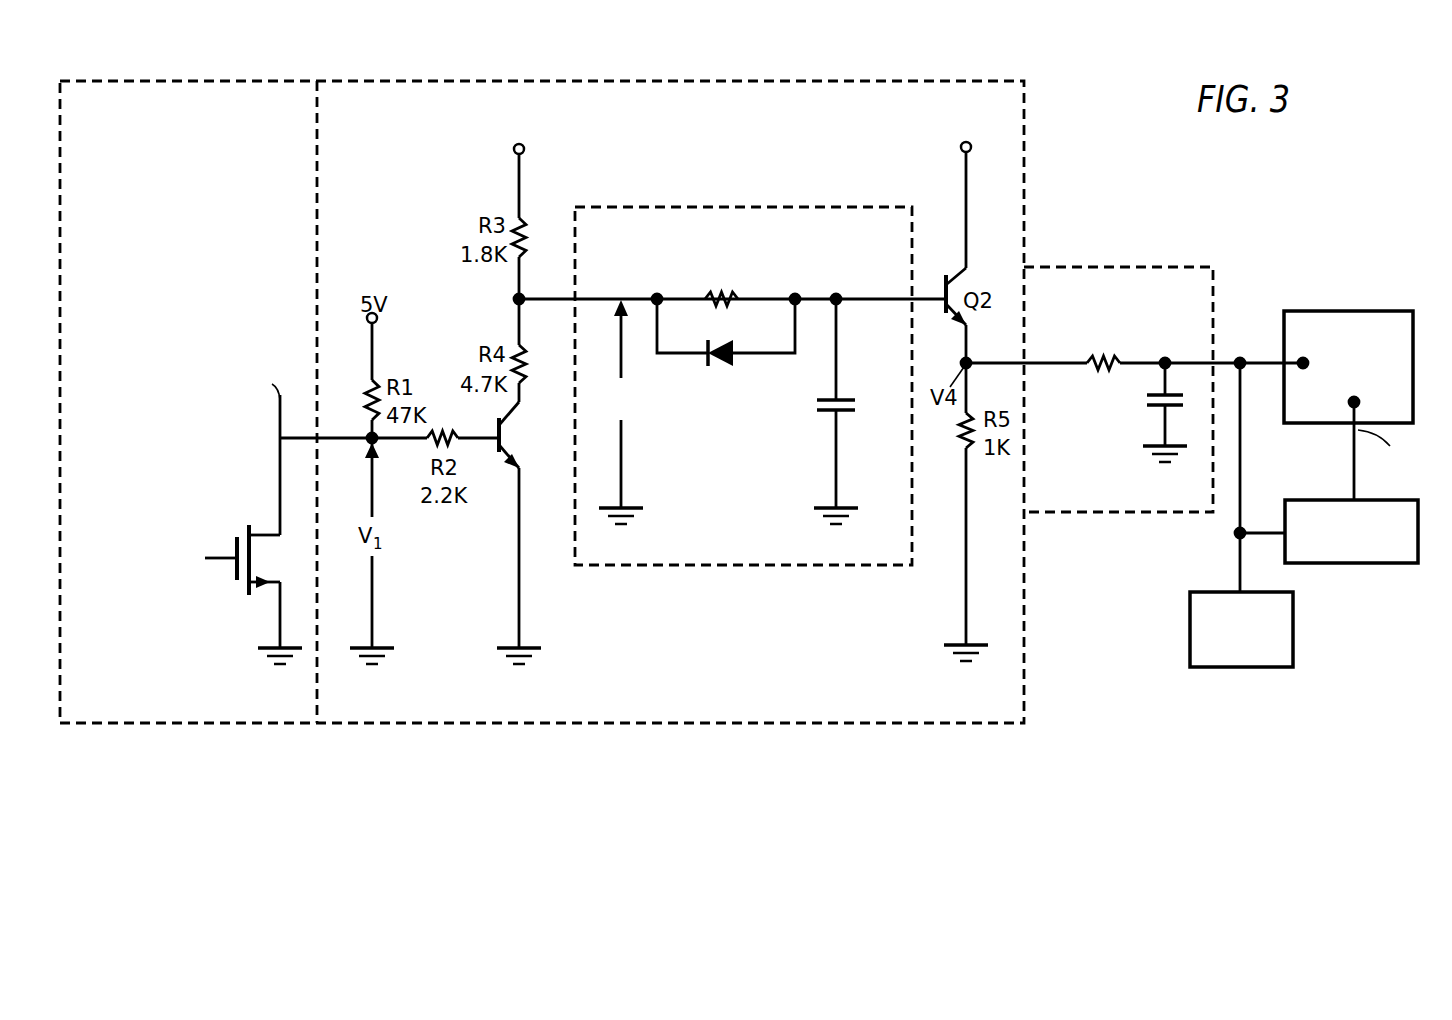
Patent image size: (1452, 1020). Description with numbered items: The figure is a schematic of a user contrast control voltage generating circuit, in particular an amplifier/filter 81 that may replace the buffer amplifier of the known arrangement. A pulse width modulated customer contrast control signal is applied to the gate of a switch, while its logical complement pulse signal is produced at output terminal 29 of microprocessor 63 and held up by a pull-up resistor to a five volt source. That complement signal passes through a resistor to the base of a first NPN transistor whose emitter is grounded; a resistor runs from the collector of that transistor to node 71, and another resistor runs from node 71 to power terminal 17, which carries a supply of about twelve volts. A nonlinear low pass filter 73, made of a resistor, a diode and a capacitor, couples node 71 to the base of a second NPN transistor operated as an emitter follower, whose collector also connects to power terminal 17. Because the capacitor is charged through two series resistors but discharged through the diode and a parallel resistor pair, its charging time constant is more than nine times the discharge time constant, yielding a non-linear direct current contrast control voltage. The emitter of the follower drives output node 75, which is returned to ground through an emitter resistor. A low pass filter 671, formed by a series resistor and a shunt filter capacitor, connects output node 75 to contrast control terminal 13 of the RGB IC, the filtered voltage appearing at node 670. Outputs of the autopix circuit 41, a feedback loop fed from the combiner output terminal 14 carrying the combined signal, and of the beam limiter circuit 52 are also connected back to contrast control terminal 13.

The amplifier/filter 81 is at (782, 88).
The microprocessor 63 is at (193, 712).
The nonlinear low pass filter 73 is at (716, 206).
The low pass filter 671 is at (1133, 513).
The power terminal 17 is at (512, 150).
The node 71 is at (519, 299).
The output terminal 29 is at (278, 438).
The output node 75 is at (968, 364).
The node 670 is at (1166, 360).
The contrast control terminal 13 is at (1303, 362).
The output terminal 14 is at (1354, 403).
The beam limiter circuit 52 is at (1190, 614).
The autopix circuit 41 is at (1352, 567).